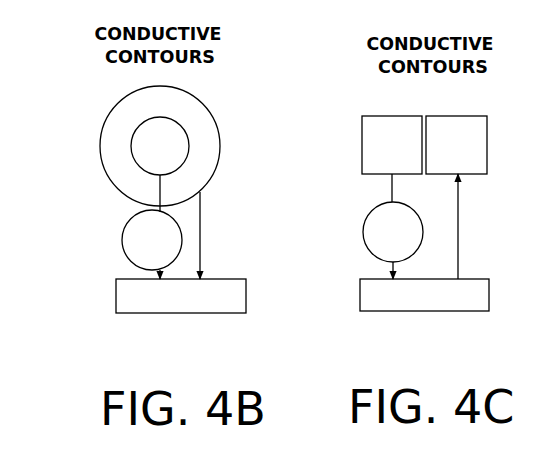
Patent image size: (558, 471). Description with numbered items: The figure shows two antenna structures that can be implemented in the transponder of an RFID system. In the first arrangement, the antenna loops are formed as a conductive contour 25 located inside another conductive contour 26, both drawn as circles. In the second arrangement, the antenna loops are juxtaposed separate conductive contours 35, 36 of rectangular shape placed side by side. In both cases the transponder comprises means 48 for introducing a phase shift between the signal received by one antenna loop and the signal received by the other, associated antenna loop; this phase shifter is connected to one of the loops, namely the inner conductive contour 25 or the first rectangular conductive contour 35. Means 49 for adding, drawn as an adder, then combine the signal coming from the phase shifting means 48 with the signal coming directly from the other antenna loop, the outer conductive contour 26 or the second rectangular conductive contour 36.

In FIG. 4B, the conductive contour 25 is at (138, 125).
In FIG. 4B, the conductive contour 26 is at (195, 95).
In FIG. 4C, the conductive contour 35 is at (383, 108).
In FIG. 4C, the conductive contour 36 is at (468, 108).
In FIG. 4B, the means for introducing a phase shift 48 is at (130, 247).
In FIG. 4C, the means for introducing a phase shift 48 is at (372, 233).
In FIG. 4B, the means for adding 49 is at (217, 305).
In FIG. 4C, the means for adding 49 is at (460, 305).